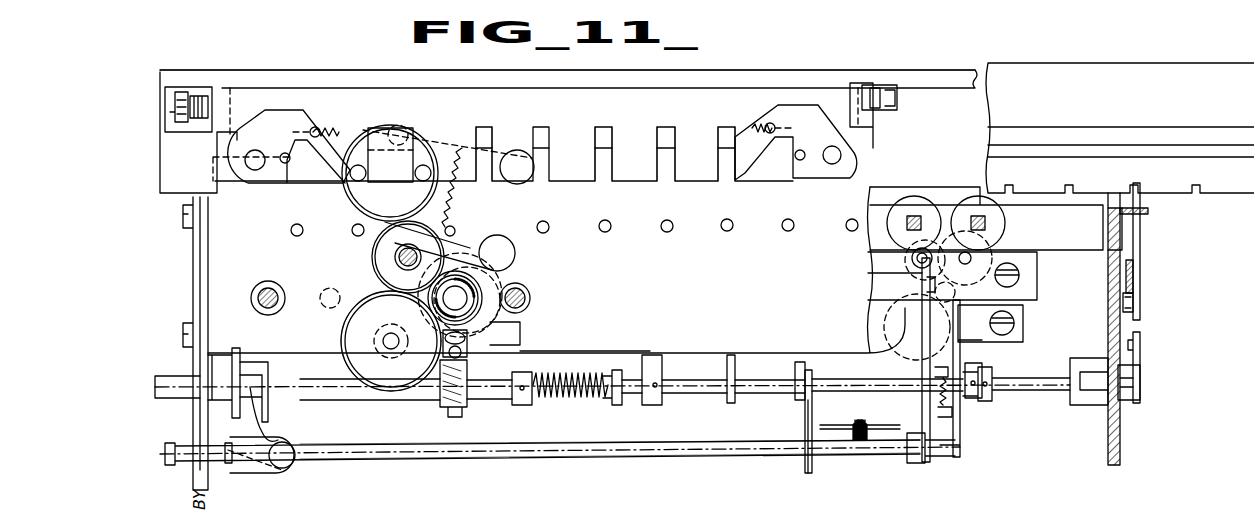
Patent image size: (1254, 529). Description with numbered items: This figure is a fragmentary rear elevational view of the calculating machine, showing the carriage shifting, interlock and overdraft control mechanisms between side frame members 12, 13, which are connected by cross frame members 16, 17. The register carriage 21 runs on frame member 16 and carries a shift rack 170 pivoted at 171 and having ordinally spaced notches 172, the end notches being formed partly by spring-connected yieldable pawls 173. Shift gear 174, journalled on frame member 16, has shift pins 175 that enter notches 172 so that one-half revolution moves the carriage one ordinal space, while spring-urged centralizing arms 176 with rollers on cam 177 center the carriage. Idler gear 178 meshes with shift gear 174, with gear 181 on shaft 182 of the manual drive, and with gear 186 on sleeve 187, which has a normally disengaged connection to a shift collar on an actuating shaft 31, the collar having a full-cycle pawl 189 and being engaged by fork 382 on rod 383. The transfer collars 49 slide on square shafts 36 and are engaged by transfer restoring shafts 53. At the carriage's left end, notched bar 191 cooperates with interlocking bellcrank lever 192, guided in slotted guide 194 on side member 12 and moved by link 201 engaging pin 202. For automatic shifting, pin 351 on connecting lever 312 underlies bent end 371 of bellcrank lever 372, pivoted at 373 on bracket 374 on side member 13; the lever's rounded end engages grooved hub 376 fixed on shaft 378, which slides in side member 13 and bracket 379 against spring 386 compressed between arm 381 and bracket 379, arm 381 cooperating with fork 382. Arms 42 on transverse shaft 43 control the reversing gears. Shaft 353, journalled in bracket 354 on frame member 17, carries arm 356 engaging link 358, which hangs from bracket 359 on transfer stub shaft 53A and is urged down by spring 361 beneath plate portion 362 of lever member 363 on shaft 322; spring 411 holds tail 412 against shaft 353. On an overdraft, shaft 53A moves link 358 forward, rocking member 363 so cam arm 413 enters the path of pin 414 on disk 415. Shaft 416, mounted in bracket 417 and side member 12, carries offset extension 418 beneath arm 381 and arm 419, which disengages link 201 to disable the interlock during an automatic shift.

The shift rack 170 is at (645, 97).
The carriage 21 is at (766, 63).
The ordinally notched bar 191 is at (1226, 183).
The pivot 171 is at (868, 92).
The side frame member 13 is at (193, 258).
The cross frame member 16 is at (722, 299).
The notches 172 is at (662, 183).
The yieldable pawls 173 is at (745, 170).
The shift gear 174 is at (348, 201).
The shift pins 175 is at (415, 173).
The cam 177 is at (379, 140).
The centralizing arms 176 is at (468, 233).
The collar 49 is at (972, 205).
The square shaft 36 is at (986, 224).
The side frame member 12 is at (1121, 426).
The interlocking bellcrank lever 192 is at (1142, 234).
The slotted guide 194 is at (1150, 212).
The link 201 is at (1134, 270).
The pin 202 is at (1134, 298).
The arm 419 is at (1142, 344).
The idler gear 178 is at (373, 253).
The actuating shaft 31 is at (952, 292).
The gear 186 is at (520, 286).
The sleeve 187 is at (440, 298).
The shaft 182 is at (388, 340).
The gear 181 is at (345, 331).
The full-cycle pawl 189 is at (418, 355).
The arm 381 is at (545, 328).
The fork 382 is at (545, 300).
The laterally offset extension 418 is at (612, 352).
The transfer restoring shaft 53 is at (1036, 266).
The transfer stub shaft 53A is at (916, 258).
The disk 415 is at (1002, 292).
The roller or pin 414 is at (868, 273).
The bracket 359 is at (927, 288).
The cam arm 413 is at (894, 322).
The link 358 is at (922, 357).
The bracket 354 is at (962, 432).
The spring 361 is at (940, 395).
The cross frame member 17 is at (1044, 346).
The shaft 378 is at (370, 402).
The transverse shaft 43 is at (165, 377).
The arms 42 is at (235, 353).
The grooved hub 376 is at (268, 364).
The bellcrank lever 372 is at (273, 432).
The bracket 374 is at (303, 444).
The pivot 373 is at (285, 468).
The bent end 371 is at (230, 465).
The pin 351 is at (172, 444).
The shaft 353 is at (630, 457).
The rod 383 is at (488, 375).
The spring 386 is at (560, 404).
The bracket 379 is at (592, 404).
The shaft 322 is at (1005, 378).
The shaft 416 is at (1093, 390).
The bracket 417 is at (730, 404).
The depending plate portion 362 is at (812, 420).
The lever member 363 is at (797, 413).
The tail 412 is at (807, 470).
The spring 411 is at (857, 440).
The arm 356 is at (918, 464).
The connecting lever 312 is at (503, 521).